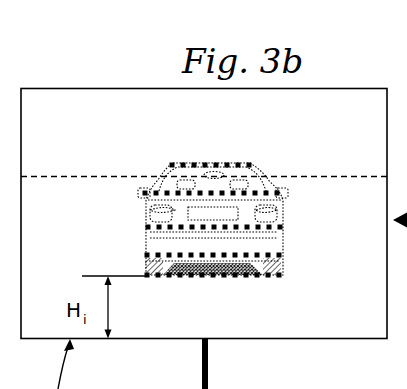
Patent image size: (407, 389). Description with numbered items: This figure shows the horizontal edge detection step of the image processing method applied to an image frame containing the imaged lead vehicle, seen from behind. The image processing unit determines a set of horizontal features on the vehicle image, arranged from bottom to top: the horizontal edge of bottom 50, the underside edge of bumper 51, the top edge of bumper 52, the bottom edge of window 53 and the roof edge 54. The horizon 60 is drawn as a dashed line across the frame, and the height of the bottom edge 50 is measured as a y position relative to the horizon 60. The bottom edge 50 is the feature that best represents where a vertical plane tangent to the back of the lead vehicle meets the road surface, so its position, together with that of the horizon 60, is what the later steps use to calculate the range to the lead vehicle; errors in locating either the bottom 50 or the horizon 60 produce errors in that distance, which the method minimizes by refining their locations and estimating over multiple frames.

The horizontal edge of bottom 50 is at (252, 276).
The underside edge of bumper 51 is at (252, 255).
The top edge of bumper 52 is at (172, 230).
The bottom edge of window 53 is at (163, 190).
The roof edge 54 is at (190, 163).
The horizon 60 is at (305, 177).